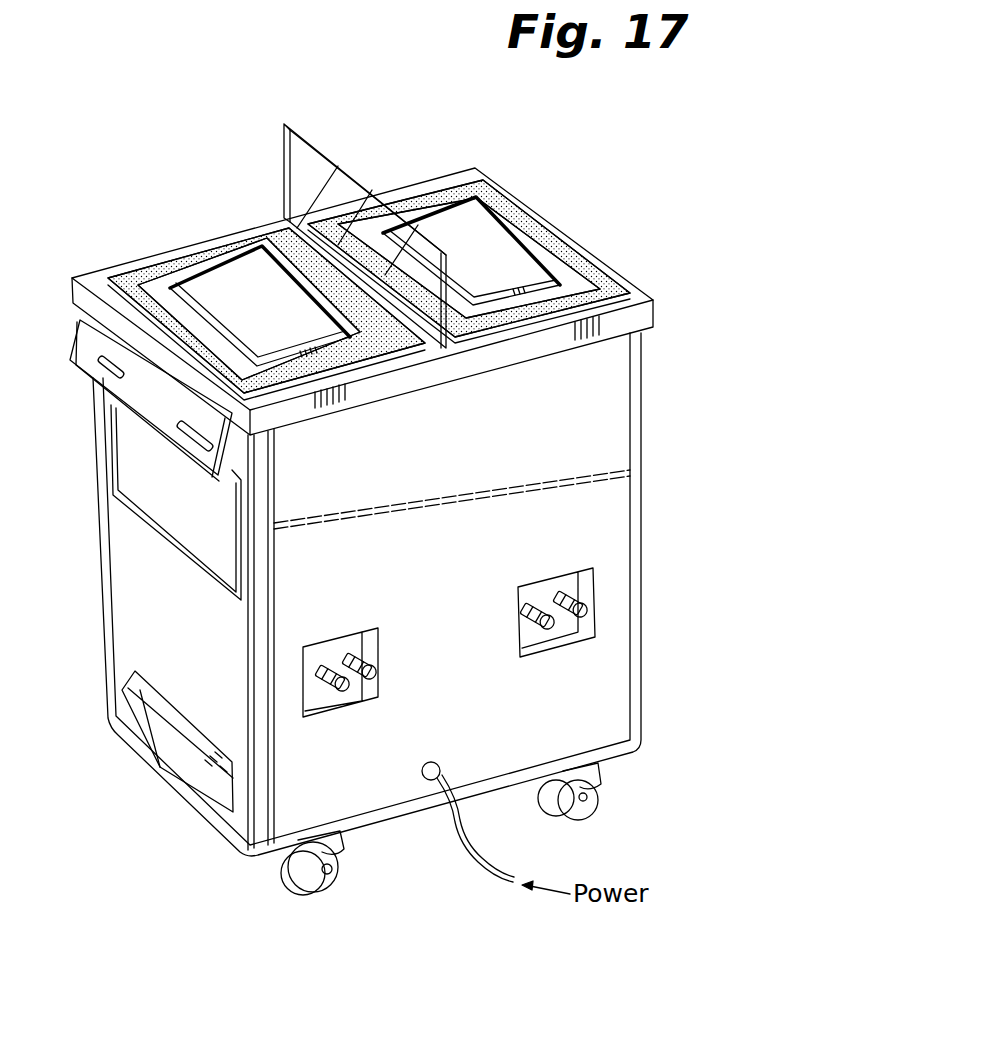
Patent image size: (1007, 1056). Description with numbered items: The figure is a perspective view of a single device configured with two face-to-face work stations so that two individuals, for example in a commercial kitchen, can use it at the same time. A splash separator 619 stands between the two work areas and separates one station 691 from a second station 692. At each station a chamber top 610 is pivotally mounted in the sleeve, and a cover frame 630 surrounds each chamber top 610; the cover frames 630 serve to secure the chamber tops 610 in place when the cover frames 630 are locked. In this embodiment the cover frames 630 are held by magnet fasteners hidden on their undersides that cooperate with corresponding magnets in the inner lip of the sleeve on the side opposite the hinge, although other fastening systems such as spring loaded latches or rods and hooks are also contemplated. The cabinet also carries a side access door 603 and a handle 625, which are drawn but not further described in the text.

The side access door 603 is at (122, 450).
The chamber top 610 is at (245, 287).
The splash separator 619 is at (290, 163).
The handle 625 is at (177, 750).
The cover frame 630 is at (140, 273).
The station 691 is at (167, 237).
The second station 692 is at (414, 170).